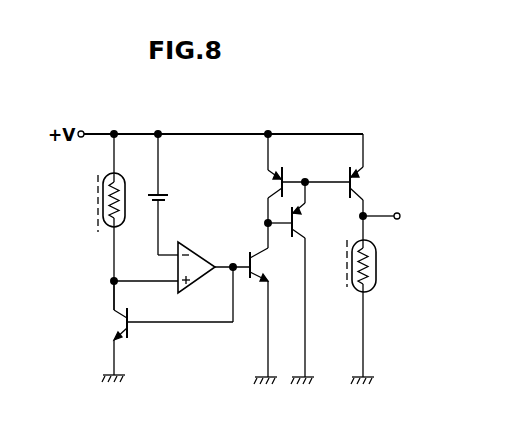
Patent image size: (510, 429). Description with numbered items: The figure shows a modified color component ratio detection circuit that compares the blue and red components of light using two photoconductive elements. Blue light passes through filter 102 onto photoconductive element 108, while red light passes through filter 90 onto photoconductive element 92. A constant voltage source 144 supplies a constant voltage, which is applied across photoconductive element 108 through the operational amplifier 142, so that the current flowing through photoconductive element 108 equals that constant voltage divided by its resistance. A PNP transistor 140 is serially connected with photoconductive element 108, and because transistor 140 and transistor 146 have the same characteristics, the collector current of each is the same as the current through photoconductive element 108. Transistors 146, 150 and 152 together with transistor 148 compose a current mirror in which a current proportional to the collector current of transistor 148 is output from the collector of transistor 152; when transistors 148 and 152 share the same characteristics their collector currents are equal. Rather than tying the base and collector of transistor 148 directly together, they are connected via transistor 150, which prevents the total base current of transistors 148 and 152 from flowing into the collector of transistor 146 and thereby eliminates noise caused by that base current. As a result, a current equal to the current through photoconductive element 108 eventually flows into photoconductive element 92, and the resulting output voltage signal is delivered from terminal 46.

The filter 102 is at (98, 202).
The photoconductive element 108 is at (108, 228).
The PNP transistor 140 is at (120, 321).
The operational amplifier 142 is at (195, 286).
The constant voltage source 144 is at (162, 195).
The transistor 146 is at (247, 281).
The transistor 148 is at (277, 181).
The transistor 150 is at (306, 218).
The transistor 152 is at (359, 183).
The terminal 46 is at (391, 212).
The filter 90 is at (347, 262).
The photoconductive element 92 is at (377, 250).